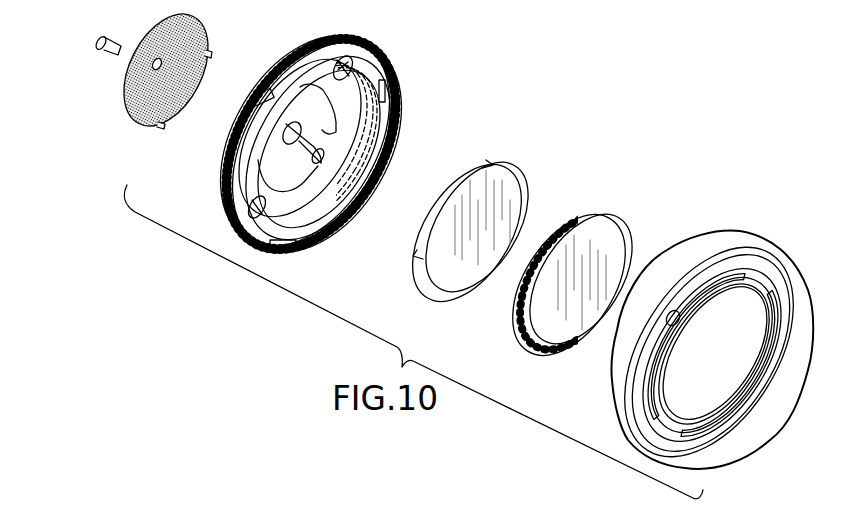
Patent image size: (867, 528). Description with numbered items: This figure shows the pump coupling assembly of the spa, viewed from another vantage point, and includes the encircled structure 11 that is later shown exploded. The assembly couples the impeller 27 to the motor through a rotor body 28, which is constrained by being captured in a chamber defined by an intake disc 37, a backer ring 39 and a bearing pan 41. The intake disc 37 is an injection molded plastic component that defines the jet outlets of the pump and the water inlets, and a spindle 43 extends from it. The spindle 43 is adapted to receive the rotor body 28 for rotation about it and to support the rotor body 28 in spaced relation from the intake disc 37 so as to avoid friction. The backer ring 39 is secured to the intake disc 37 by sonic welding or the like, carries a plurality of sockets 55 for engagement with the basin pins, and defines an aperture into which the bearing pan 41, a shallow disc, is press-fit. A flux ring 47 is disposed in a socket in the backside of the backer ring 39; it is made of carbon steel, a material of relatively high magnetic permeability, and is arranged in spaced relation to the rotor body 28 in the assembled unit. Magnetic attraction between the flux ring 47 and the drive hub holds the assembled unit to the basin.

The encircled structure 11 is at (768, 240).
The impeller 27 is at (449, 176).
The rotor body 28 is at (513, 207).
The intake disc 37 is at (350, 39).
The backer ring 39 is at (716, 267).
The bearing pan 41 is at (582, 215).
The spindle 43 is at (300, 150).
The flux ring 47 is at (740, 403).
The socket 55 is at (788, 318).